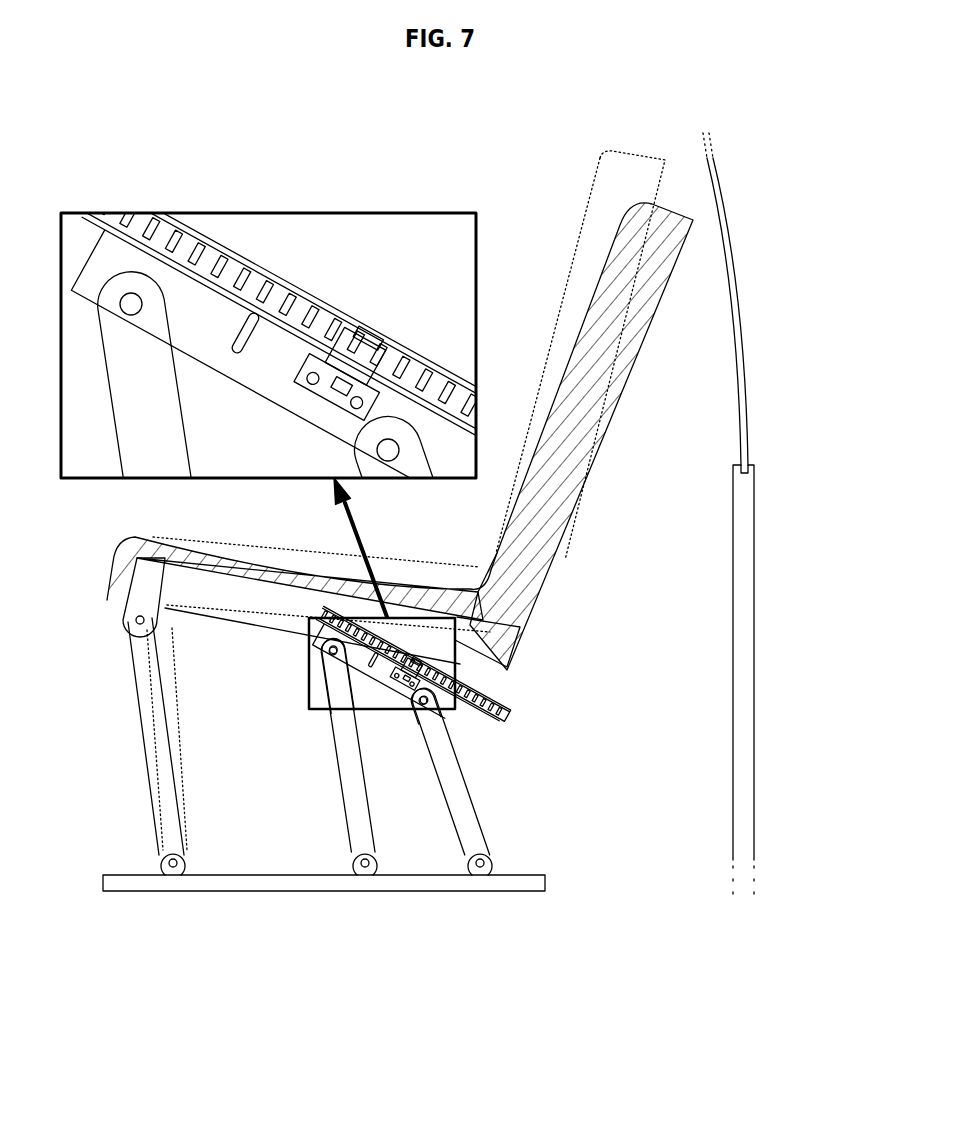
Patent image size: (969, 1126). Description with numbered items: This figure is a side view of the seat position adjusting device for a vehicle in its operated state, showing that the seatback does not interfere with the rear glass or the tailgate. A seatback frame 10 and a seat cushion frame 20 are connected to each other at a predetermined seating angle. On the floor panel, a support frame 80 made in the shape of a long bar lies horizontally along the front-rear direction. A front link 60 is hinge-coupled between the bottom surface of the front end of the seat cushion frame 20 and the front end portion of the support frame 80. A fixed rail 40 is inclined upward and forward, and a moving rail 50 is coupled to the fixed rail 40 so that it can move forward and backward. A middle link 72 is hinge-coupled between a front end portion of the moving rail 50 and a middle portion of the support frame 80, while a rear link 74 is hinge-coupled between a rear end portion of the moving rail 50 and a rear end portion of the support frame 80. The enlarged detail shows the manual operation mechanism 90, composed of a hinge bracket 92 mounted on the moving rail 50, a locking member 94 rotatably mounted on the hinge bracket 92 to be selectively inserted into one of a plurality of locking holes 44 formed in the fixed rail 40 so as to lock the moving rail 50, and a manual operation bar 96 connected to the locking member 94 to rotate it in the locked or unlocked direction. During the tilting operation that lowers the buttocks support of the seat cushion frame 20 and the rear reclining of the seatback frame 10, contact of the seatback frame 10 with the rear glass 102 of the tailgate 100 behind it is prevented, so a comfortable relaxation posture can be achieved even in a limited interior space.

The seatback frame 10 is at (627, 243).
The seat cushion frame 20 is at (208, 560).
The fixed rail 40 is at (335, 393).
The locking holes 44 is at (362, 345).
The moving rail 50 is at (188, 297).
The front link 60 is at (150, 683).
The middle link 72 is at (343, 752).
The rear link 74 is at (463, 807).
The support frame 80 is at (289, 902).
The manual operation mechanism 90 is at (344, 378).
The hinge bracket 92 is at (313, 388).
The locking member 94 is at (357, 352).
The manual operation bar 96 is at (245, 332).
The tailgate 100 is at (743, 521).
The rear glass 102 is at (740, 388).